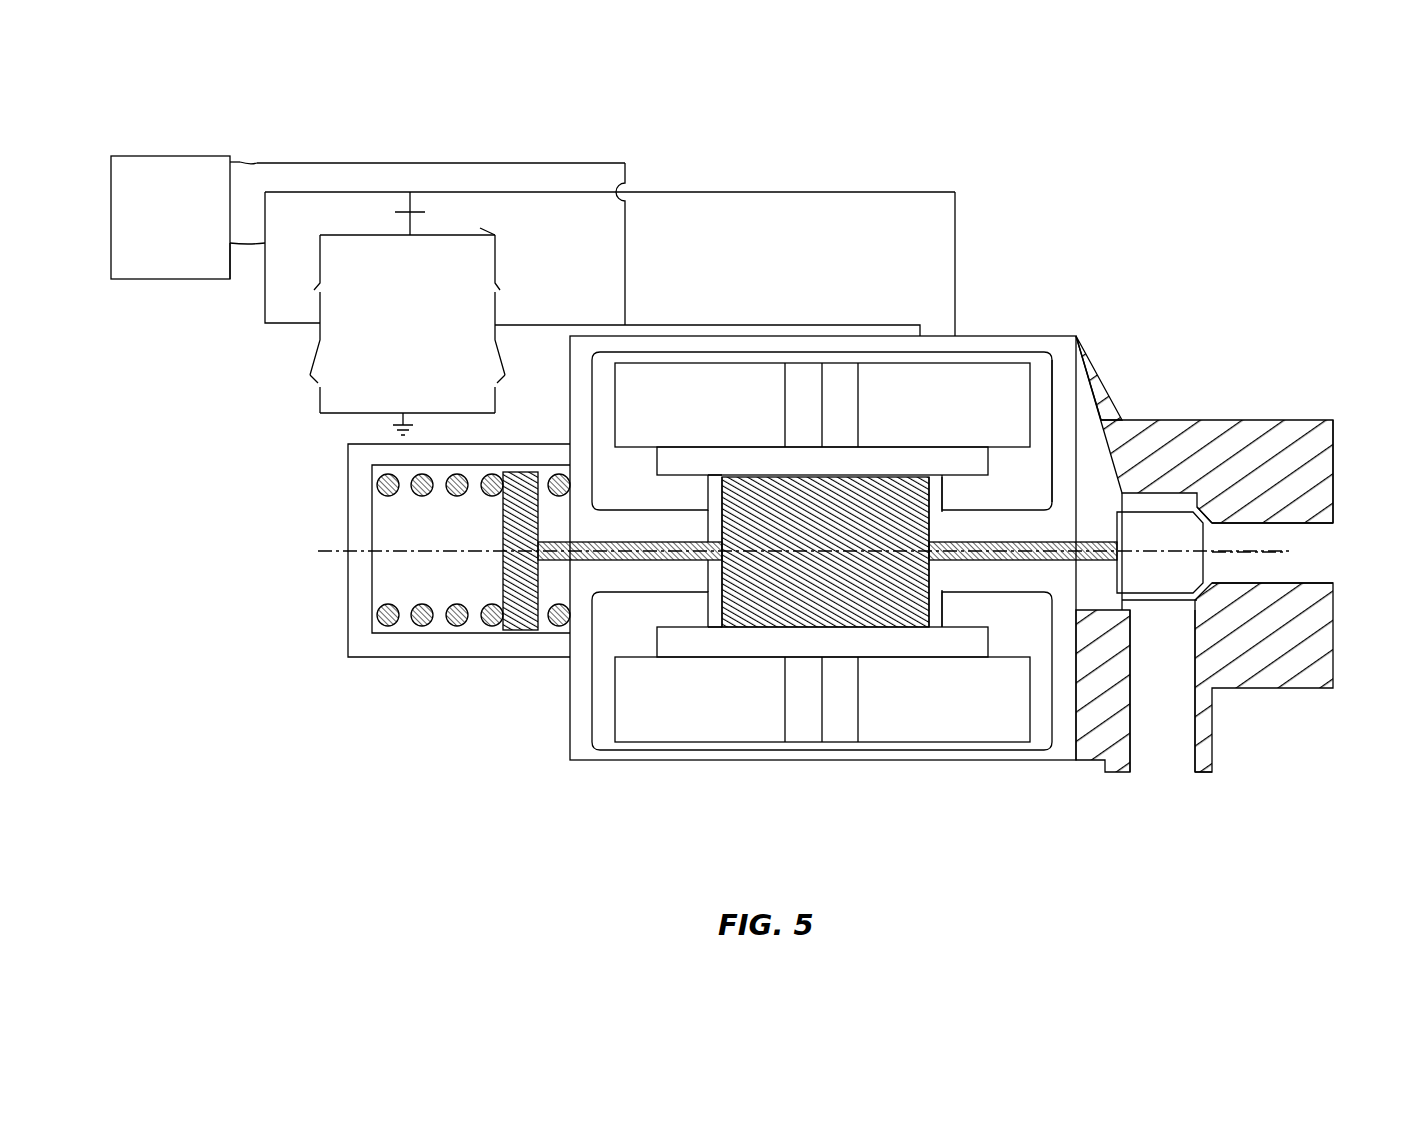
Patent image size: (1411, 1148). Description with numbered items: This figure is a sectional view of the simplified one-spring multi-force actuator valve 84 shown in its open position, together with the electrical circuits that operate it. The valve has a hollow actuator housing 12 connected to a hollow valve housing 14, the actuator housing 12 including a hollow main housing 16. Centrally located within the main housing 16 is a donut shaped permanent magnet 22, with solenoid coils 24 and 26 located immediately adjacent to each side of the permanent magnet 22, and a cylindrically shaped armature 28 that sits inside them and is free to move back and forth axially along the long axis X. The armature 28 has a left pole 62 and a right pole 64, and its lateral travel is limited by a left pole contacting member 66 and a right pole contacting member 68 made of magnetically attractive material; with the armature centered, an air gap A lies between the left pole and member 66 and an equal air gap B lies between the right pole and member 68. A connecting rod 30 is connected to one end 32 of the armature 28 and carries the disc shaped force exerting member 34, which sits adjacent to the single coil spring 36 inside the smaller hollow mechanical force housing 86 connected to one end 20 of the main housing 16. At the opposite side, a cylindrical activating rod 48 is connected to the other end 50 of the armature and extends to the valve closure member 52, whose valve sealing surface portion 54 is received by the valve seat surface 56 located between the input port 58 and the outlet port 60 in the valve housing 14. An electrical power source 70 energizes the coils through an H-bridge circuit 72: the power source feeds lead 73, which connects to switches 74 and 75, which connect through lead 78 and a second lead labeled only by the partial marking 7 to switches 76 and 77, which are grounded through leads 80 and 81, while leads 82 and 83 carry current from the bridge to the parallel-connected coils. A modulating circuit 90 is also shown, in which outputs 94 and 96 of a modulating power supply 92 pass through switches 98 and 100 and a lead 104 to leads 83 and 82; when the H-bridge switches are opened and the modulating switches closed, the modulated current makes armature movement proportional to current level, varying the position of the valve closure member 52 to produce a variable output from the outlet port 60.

The switch arm 7 is at (493, 323).
The actuator housing 12 is at (553, 771).
The valve housing 14 is at (1094, 420).
The main housing 16 is at (745, 622).
The end of the main housing 20 is at (570, 745).
The permanent magnet 22 is at (868, 725).
The solenoid coil 24 is at (1080, 343).
The solenoid coil 26 is at (800, 705).
The armature 28 is at (857, 632).
The connecting rod 30 is at (555, 561).
The end of the armature 32 is at (658, 583).
The force exerting member 34 is at (500, 622).
The coil spring 36 is at (408, 620).
The activating rod 48 is at (1120, 565).
The end of the armature 50 is at (940, 616).
The valve closure member 52 is at (1136, 528).
The valve sealing surface portion 54 is at (1234, 545).
The valve seat surface 56 is at (1302, 535).
The input port 58 is at (1302, 524).
The outlet port 60 is at (1200, 752).
The left pole 62 is at (714, 566).
The right pole 64 is at (922, 482).
The left pole contacting member 66 is at (663, 573).
The right pole contacting member 68 is at (1000, 520).
The electrical power source 70 is at (415, 210).
The H-bridge circuit 72 is at (514, 274).
The lead 73 is at (493, 237).
The electrical switch 74 is at (322, 283).
The electrical switch 75 is at (492, 283).
The electrical switch 76 is at (316, 382).
The electrical switch 77 is at (494, 363).
The electrically conductive lead 78 is at (323, 330).
The electrically conductive lead 80 is at (320, 405).
The electrically conductive lead 81 is at (500, 406).
The electrically conductive lead 82 is at (730, 192).
The electrically conductive lead 83 is at (627, 325).
The multi-force actuator valve 84 is at (972, 246).
The mechanical force housing 86 is at (450, 657).
The modulating circuit 90 is at (146, 360).
The modulating power supply 92 is at (128, 156).
The electrical output 94 is at (238, 160).
The electrical output 96 is at (232, 278).
The switch 98 is at (242, 166).
The switch 100 is at (270, 190).
The electrically conductive lead 104 is at (254, 248).
The air gap A is at (712, 578).
The air gap B is at (932, 600).
The long axis X is at (1258, 553).